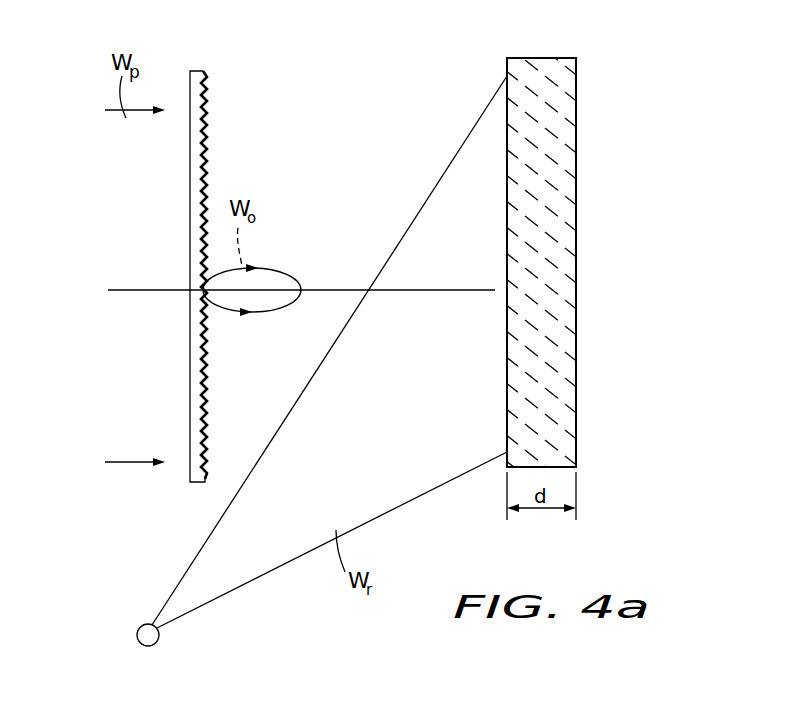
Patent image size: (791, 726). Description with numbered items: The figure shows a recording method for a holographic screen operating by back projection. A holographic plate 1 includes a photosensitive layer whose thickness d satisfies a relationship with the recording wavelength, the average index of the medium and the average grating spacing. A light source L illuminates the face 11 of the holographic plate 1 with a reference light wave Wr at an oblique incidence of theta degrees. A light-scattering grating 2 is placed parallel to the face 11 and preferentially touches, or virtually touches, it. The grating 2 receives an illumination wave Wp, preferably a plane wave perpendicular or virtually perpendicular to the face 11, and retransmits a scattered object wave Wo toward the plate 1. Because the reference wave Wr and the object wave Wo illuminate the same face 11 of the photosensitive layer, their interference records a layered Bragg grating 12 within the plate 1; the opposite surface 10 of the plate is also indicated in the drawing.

The holographic plate 1 is at (541, 62).
The light-scattering grating 2 is at (190, 470).
The rear surface of plate 10 is at (588, 94).
The face of the holographic plate 11 is at (494, 101).
The layered grating 12 is at (582, 418).
The light source L is at (153, 644).